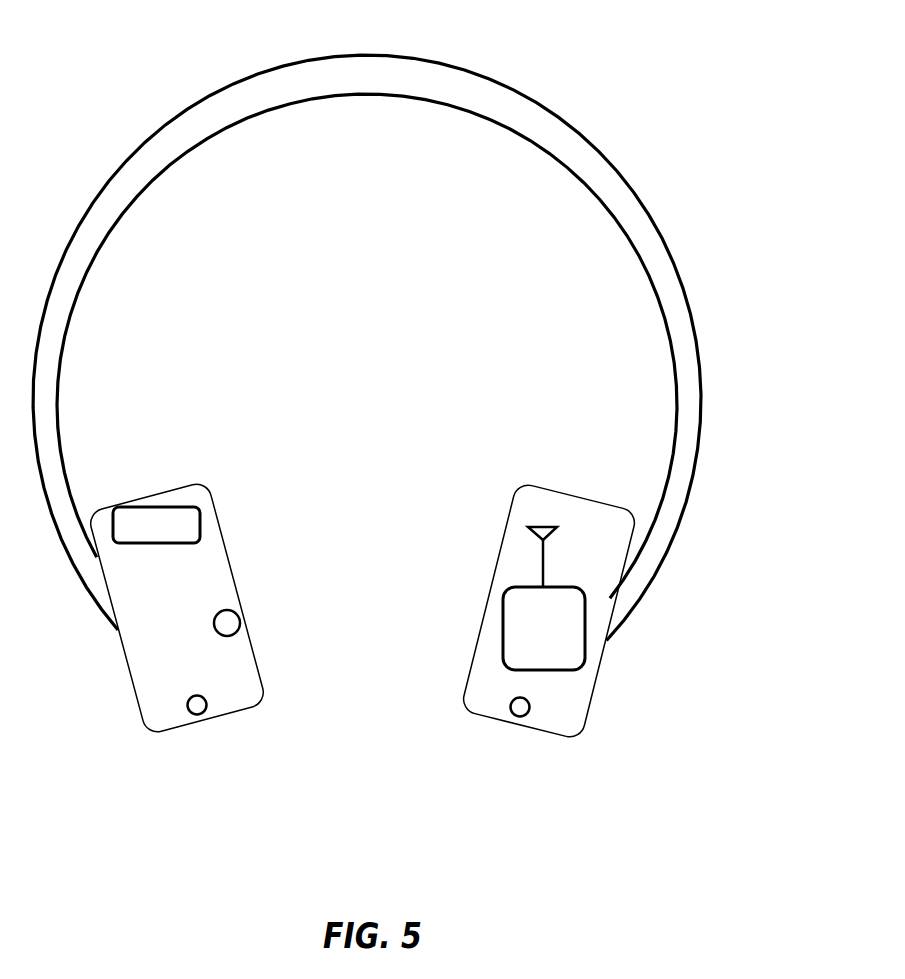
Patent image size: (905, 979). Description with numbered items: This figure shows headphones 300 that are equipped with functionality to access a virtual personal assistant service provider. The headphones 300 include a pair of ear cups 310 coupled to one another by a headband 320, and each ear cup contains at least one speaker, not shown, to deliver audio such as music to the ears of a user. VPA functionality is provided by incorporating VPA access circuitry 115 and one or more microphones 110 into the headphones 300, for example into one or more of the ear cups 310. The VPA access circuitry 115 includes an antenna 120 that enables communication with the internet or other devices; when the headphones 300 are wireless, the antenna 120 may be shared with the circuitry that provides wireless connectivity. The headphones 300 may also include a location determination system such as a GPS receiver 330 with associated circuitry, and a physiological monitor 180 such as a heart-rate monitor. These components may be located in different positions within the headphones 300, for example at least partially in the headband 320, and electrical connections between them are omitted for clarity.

The headphones 300 is at (687, 157).
The headband 320 is at (207, 120).
The ear cups 310 is at (143, 663).
The GPS receiver 330 is at (153, 513).
The physiological monitor 180 is at (230, 626).
The microphones 110 is at (199, 707).
The VPA access circuitry 115 is at (555, 652).
The antenna 120 is at (542, 556).